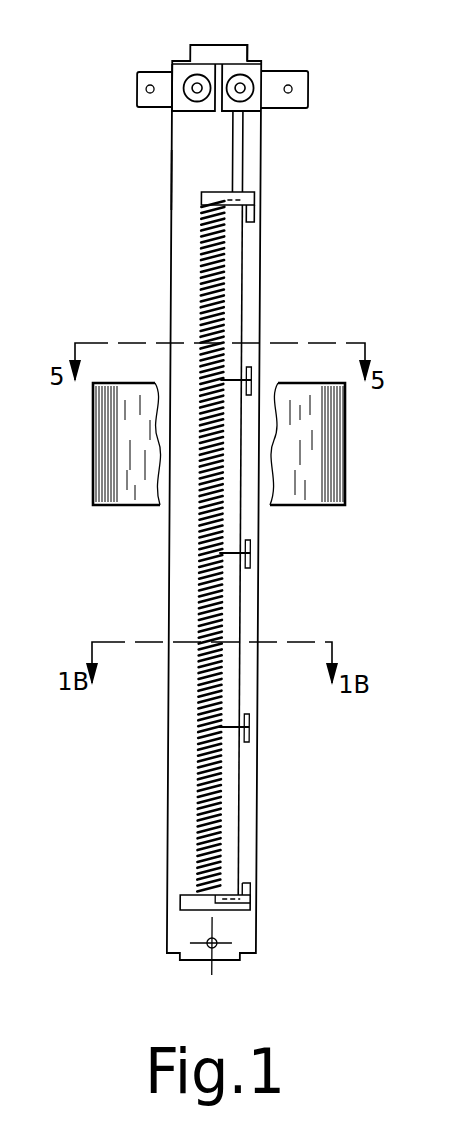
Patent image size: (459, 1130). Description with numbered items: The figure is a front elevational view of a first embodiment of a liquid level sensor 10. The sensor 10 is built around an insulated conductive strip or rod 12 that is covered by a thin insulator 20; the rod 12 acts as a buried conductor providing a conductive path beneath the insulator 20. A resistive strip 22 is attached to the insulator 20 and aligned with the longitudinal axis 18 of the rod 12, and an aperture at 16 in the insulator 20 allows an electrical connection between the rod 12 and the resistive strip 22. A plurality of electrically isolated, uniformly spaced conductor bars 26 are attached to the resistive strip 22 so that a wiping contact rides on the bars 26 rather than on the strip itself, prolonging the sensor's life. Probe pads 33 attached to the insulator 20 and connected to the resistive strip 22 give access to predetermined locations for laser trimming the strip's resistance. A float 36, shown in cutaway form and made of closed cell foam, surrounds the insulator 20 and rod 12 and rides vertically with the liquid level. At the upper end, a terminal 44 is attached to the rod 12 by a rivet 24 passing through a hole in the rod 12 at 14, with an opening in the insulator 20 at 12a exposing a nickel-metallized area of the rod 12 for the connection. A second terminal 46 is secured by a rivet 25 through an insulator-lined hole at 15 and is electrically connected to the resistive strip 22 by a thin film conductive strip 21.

The liquid level sensor 10 is at (115, 713).
The insulated conductive rod 12 is at (169, 810).
The aperture in insulator 12a is at (207, 51).
The hole in rod 14 is at (190, 95).
The hole in rod 15 is at (236, 80).
The aperture in insulator 16 is at (230, 912).
The longitudinal axis 18 is at (213, 973).
The insulator 20 is at (187, 171).
The thin film conductive strip 21 is at (244, 156).
The resistive strip 22 is at (247, 253).
The rivet 24 is at (186, 82).
The rivet 25 is at (251, 76).
The conductor bars 26 is at (203, 233).
The probe pads 33 is at (256, 376).
The float 36 is at (94, 456).
The terminal 44 is at (137, 89).
The terminal 46 is at (308, 82).